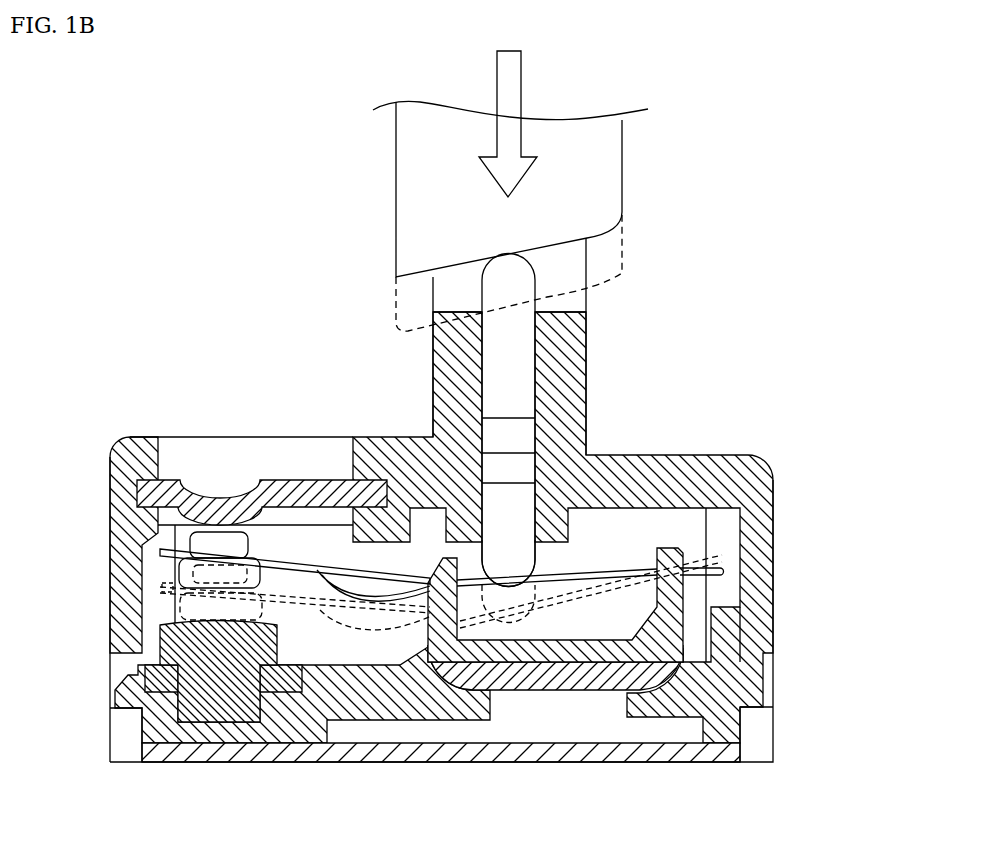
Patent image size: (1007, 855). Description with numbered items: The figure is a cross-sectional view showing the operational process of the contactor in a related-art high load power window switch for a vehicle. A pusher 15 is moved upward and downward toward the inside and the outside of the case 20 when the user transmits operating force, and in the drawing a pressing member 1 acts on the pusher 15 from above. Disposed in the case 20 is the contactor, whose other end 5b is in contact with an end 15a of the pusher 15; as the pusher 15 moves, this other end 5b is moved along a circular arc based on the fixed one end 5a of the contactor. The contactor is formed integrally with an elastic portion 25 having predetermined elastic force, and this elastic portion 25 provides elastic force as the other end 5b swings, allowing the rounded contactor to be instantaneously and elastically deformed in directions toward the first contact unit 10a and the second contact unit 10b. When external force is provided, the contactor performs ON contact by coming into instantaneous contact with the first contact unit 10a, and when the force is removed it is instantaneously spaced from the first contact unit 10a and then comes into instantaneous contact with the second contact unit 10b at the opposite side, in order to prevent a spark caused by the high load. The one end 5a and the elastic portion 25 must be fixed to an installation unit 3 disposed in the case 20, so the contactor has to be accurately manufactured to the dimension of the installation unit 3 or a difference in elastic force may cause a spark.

The pressing member 1 is at (591, 163).
The installation unit 3 is at (577, 680).
The one end of the contactor 5a is at (722, 555).
The other end of the contactor 5b is at (163, 557).
The first contact unit 10a is at (215, 682).
The second contact unit 10b is at (172, 497).
The pusher 15 is at (513, 353).
The end of the pusher 15a is at (522, 528).
The case 20 is at (683, 462).
The elastic portion 25 is at (350, 767).